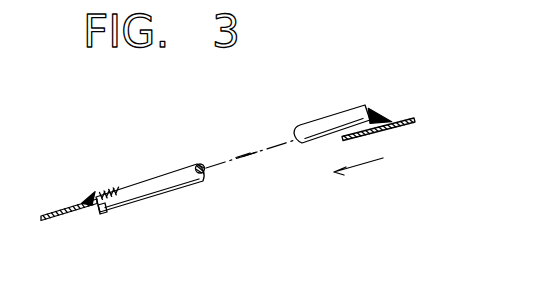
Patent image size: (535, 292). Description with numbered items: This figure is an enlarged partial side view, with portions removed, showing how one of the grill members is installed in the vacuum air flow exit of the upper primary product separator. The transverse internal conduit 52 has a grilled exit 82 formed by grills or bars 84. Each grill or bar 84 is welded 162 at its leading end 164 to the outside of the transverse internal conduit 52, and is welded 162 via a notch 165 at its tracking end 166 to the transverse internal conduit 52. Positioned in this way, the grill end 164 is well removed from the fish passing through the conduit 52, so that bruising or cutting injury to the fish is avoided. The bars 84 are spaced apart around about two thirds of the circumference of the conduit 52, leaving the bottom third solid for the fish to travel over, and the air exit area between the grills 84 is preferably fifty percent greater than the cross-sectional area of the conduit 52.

The transverse internal conduit 52 is at (65, 219).
The grilled exit 82 is at (143, 181).
The grills or bars 84 is at (194, 163).
The weld 162 is at (85, 196).
The leading end 164 is at (366, 106).
The notch 165 is at (104, 211).
The tracking end 166 is at (102, 190).